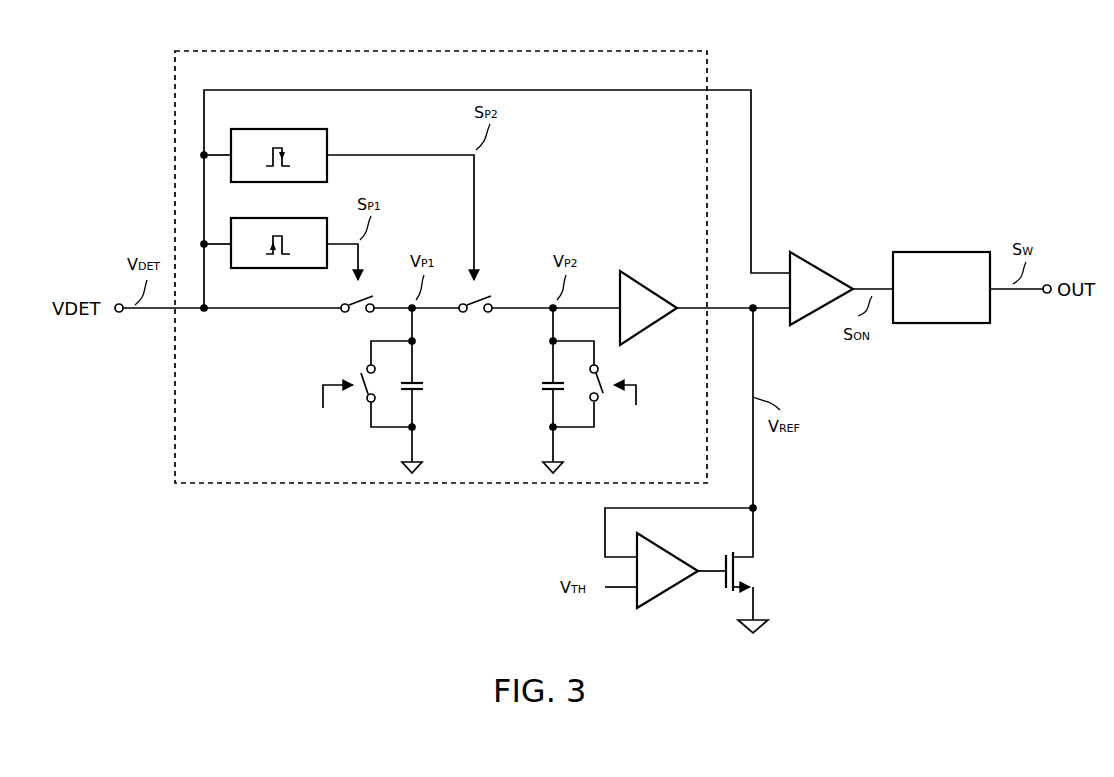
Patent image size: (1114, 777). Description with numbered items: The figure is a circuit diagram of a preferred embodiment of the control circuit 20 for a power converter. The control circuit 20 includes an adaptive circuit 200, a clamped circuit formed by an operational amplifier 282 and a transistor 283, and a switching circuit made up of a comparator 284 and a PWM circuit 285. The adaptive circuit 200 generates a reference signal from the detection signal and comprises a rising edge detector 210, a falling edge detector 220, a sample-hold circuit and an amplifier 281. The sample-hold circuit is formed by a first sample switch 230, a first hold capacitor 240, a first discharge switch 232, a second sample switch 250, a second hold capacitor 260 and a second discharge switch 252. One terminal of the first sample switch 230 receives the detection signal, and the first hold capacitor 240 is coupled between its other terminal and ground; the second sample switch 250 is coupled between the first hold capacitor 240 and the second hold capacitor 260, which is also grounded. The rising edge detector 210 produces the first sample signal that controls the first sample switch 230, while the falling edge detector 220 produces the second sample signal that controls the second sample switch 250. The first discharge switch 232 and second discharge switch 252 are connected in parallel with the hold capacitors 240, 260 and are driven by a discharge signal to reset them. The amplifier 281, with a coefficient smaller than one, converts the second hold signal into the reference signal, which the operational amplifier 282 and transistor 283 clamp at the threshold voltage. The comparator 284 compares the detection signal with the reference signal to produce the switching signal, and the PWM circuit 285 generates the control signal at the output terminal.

The control circuit 20 is at (1068, 48).
The adaptive circuit 200 is at (441, 256).
The rising edge detector 210 is at (279, 232).
The falling edge detector 220 is at (279, 144).
The first sample switch 230 is at (358, 317).
The first discharge switch 232 is at (362, 387).
The first hold capacitor 240 is at (432, 390).
The second sample switch 250 is at (476, 318).
The second discharge switch 252 is at (597, 387).
The second hold capacitor 260 is at (533, 390).
The amplifier 281 is at (650, 303).
The operational amplifier 282 is at (681, 567).
The transistor 283 is at (759, 570).
The comparator 284 is at (841, 287).
The PWM circuit 285 is at (972, 275).